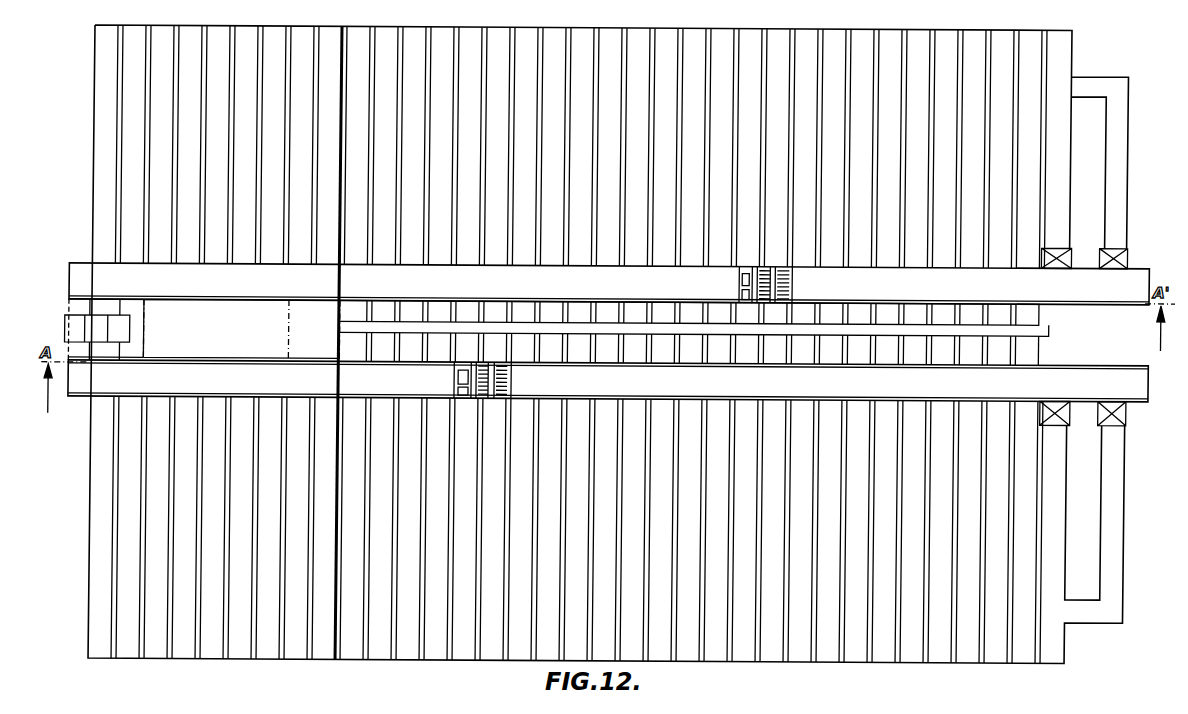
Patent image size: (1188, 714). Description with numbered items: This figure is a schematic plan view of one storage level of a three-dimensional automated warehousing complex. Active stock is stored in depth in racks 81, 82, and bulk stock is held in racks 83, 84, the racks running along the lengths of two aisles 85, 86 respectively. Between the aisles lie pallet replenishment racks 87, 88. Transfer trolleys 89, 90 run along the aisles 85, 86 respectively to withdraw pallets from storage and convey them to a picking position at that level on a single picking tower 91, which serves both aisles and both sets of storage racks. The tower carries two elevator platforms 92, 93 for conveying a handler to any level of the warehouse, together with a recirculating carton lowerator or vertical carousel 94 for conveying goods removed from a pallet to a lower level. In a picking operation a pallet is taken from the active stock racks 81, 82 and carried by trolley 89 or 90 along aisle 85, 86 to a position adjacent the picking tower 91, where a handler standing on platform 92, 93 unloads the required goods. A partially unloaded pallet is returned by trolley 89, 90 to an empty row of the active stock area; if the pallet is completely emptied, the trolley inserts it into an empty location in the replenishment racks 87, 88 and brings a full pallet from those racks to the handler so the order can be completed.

The active stock storage rack 81 is at (252, 58).
The active stock storage rack 82 is at (216, 620).
The bulk stock storage rack 83 is at (781, 60).
The bulk stock storage rack 84 is at (826, 622).
The aisle 85 is at (1116, 297).
The aisle 86 is at (1096, 380).
The pallet replenishment rack 87 is at (1038, 314).
The pallet replenishment rack 88 is at (1034, 348).
The transfer trolley 89 is at (748, 285).
The transfer trolley 90 is at (466, 381).
The picking tower 91 is at (113, 353).
The elevator platform 92 is at (108, 308).
The elevator platform 93 is at (138, 312).
The recirculating carton lowerator 94 is at (76, 326).